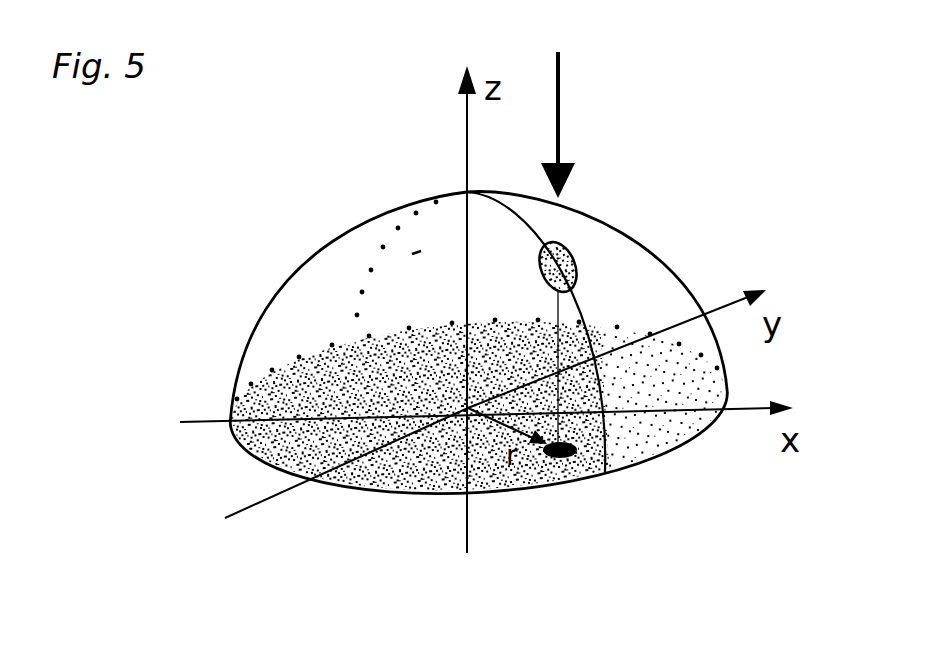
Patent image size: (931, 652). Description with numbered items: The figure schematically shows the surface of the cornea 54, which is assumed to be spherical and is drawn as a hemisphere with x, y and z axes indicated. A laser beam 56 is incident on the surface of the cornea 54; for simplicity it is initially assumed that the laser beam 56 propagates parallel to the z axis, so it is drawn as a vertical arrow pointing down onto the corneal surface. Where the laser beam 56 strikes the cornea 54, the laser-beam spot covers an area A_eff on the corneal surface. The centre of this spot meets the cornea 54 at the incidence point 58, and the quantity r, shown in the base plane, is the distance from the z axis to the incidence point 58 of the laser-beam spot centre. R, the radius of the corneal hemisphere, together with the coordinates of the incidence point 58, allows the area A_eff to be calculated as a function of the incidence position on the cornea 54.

The cornea 54 is at (672, 273).
The laser beam 56 is at (567, 113).
The incidence point 58 is at (573, 258).